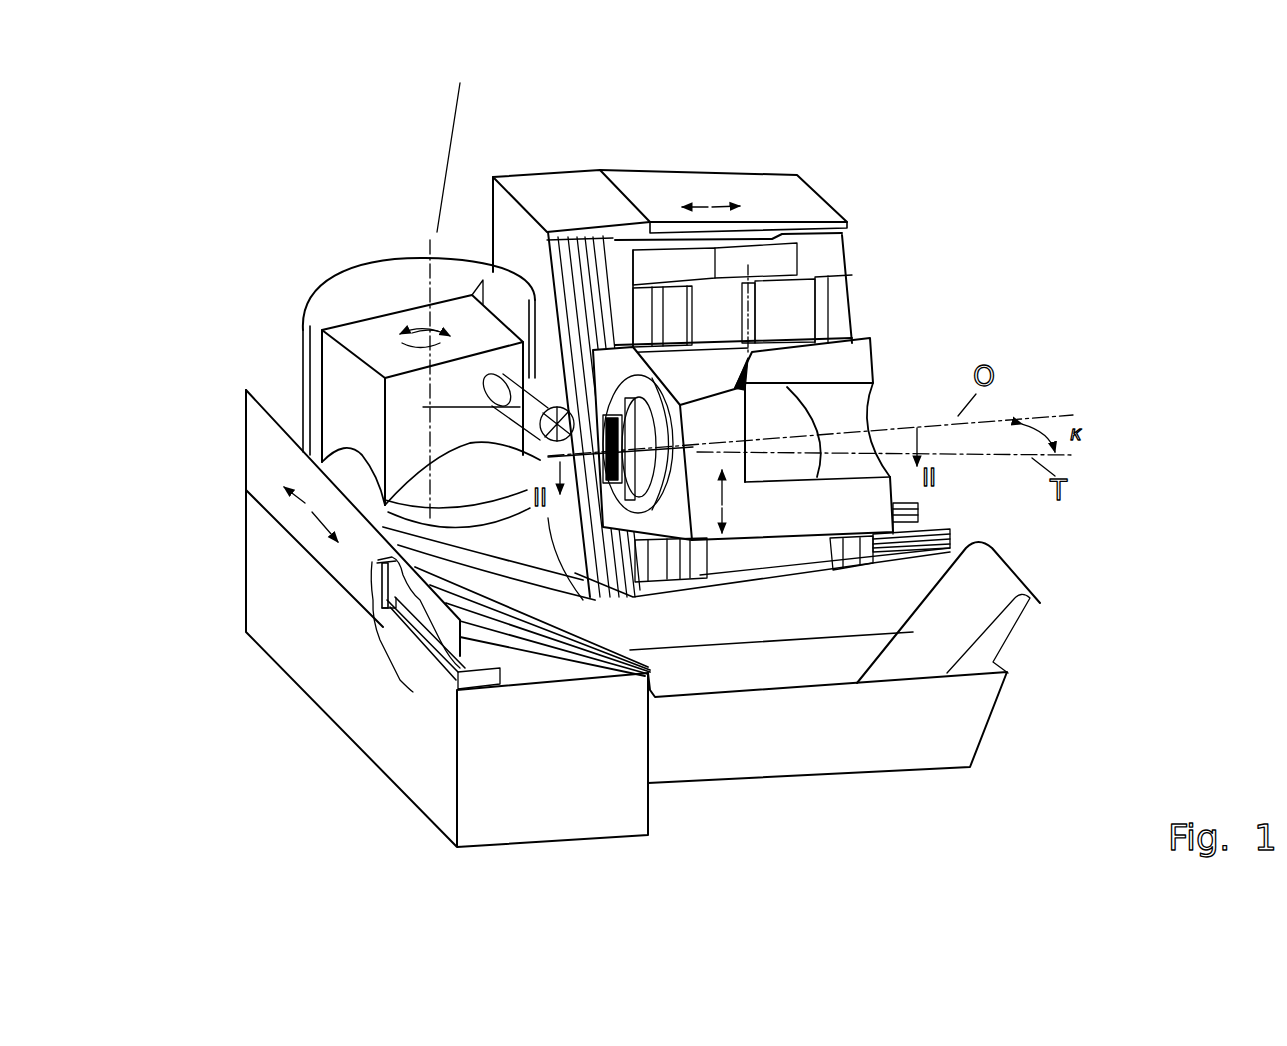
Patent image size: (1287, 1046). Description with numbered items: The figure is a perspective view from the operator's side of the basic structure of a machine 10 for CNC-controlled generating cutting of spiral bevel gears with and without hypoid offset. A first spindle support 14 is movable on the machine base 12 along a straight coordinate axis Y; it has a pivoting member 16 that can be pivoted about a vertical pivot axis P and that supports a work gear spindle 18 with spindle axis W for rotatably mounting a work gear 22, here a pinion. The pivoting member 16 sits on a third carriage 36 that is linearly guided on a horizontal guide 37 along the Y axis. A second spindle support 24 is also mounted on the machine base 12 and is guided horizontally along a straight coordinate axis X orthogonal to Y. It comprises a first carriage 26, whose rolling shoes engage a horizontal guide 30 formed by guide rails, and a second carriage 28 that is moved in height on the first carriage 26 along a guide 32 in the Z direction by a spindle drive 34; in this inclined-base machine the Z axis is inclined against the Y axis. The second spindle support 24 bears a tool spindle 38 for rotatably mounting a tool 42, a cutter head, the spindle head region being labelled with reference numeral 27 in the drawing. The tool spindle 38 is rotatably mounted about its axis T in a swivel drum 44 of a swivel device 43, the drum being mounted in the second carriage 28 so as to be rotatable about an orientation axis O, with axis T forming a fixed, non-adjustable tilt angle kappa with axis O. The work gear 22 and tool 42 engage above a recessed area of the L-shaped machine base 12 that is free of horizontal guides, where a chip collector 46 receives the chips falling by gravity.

The machine 10 is at (989, 230).
The machine base 12 is at (430, 670).
The first spindle support 14 is at (357, 297).
The pivoting member 16 is at (350, 385).
The work gear spindle 18 is at (494, 388).
The work gear 22 is at (537, 421).
The second spindle support 24 is at (629, 165).
The first carriage 26 is at (792, 186).
The spindle head 27 is at (783, 573).
The second carriage 28 is at (862, 358).
The horizontal guide 30 is at (918, 508).
The guide 32 is at (834, 303).
The spindle drive 34 is at (755, 310).
The third carriage 36 is at (387, 583).
The horizontal guide 37 is at (407, 633).
The tool spindle 38 is at (619, 428).
The tool 42 is at (578, 493).
The swivel device 43 is at (770, 475).
The swivel drum 44 is at (658, 473).
The chip collector 46 is at (955, 727).